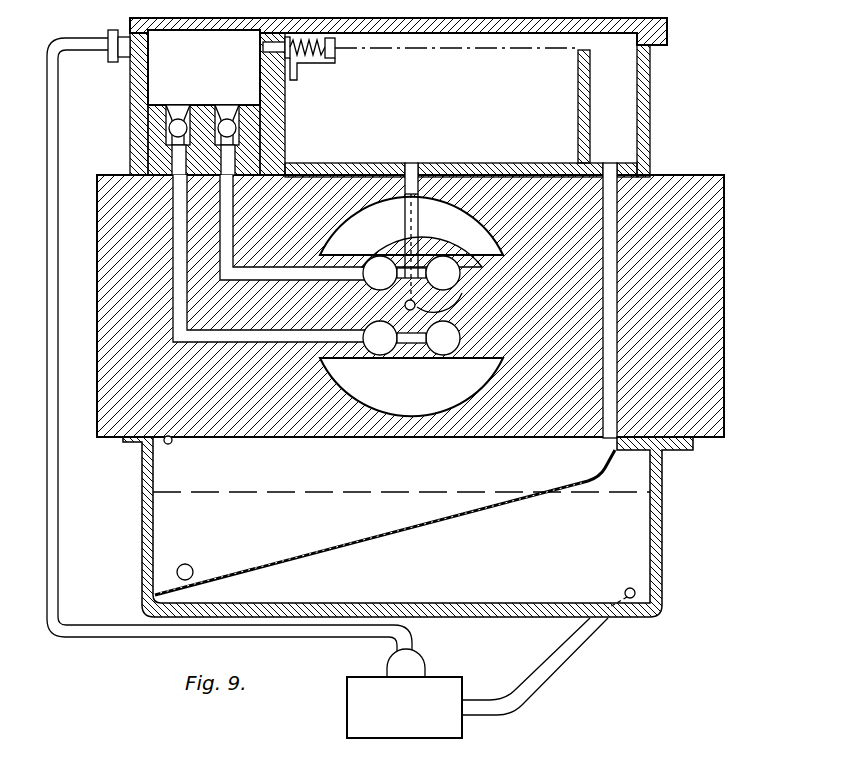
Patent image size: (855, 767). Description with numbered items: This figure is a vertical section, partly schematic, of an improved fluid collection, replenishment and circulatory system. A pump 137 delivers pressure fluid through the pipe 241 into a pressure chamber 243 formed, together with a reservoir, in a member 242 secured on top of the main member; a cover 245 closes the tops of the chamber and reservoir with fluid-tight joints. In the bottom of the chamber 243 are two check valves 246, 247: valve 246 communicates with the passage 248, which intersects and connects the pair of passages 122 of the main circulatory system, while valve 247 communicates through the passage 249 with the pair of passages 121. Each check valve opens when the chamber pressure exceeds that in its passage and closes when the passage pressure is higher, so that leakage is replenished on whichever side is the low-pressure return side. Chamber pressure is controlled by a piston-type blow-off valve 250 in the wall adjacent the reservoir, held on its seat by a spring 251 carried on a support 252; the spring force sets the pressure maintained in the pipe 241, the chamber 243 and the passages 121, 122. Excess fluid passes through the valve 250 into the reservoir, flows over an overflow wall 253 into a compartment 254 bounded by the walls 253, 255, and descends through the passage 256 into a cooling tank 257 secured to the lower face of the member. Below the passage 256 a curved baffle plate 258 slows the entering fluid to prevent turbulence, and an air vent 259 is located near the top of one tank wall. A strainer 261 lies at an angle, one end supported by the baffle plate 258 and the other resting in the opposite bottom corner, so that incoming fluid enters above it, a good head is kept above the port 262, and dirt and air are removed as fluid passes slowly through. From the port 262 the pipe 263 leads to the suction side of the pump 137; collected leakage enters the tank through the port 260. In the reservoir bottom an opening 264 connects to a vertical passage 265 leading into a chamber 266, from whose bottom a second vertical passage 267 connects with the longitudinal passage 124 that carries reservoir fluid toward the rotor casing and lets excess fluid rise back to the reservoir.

The pair of passages 121 is at (385, 258).
The pair of passages 122 is at (440, 350).
The longitudinal passage 124 is at (478, 252).
The pump 137 is at (404, 693).
The pipe 241 is at (120, 633).
The member 242 is at (142, 150).
The pressure chamber 243 is at (207, 102).
The cover 245 is at (497, 33).
The check valve 246 is at (143, 45).
The check valve 247 is at (240, 133).
The passage 248 is at (182, 212).
The passage 249 is at (235, 208).
The blow-off valve 250 is at (270, 47).
The spring 251 is at (318, 63).
The support 252 is at (336, 48).
The overflow wall 253 is at (578, 120).
The compartment 254 is at (615, 100).
The wall 255 is at (652, 130).
The passage 256 is at (610, 215).
The cooling tank 257 is at (408, 527).
The curved baffle plate 258 is at (622, 470).
The air vent 259 is at (173, 441).
The port 260 is at (177, 573).
The strainer 261 is at (345, 522).
The port 262 is at (636, 593).
The pipe 263 is at (587, 647).
The opening 264 is at (413, 190).
The vertical passage 265 is at (427, 180).
The chamber 266 is at (370, 217).
The vertical passage 267 is at (350, 267).